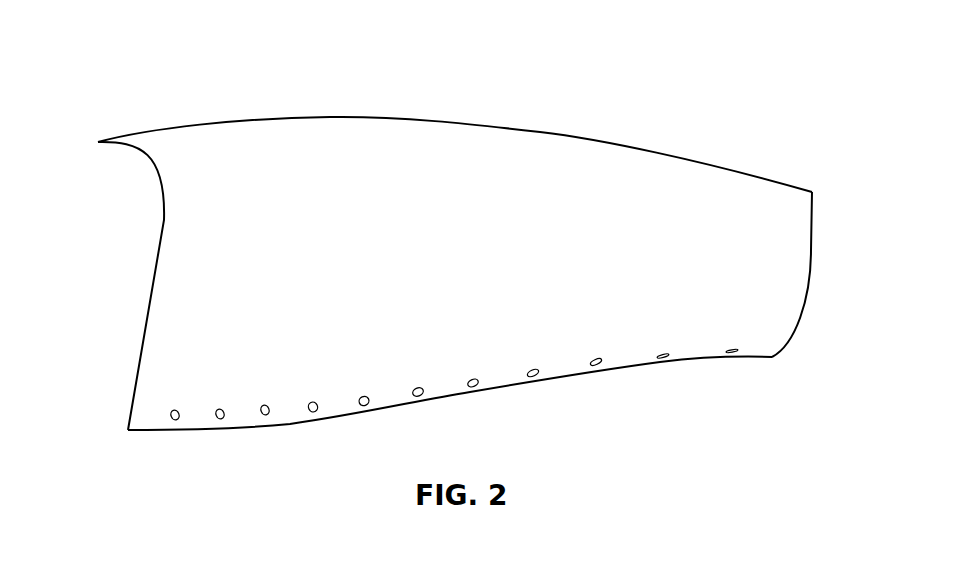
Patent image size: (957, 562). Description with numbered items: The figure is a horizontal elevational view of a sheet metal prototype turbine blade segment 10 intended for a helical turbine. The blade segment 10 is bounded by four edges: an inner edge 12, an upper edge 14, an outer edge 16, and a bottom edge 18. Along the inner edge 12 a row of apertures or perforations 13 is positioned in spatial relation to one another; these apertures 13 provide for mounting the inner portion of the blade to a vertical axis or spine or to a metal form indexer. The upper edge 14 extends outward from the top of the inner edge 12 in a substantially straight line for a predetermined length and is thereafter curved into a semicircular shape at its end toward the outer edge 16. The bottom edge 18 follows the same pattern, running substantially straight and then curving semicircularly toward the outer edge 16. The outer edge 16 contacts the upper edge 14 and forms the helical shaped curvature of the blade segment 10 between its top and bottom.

The turbine blade segment 10 is at (141, 64).
The inner edge 12 is at (397, 395).
The apertures or perforations 13 is at (170, 411).
The upper edge 14 is at (171, 251).
The outer edge 16 is at (482, 150).
The bottom edge 18 is at (802, 255).